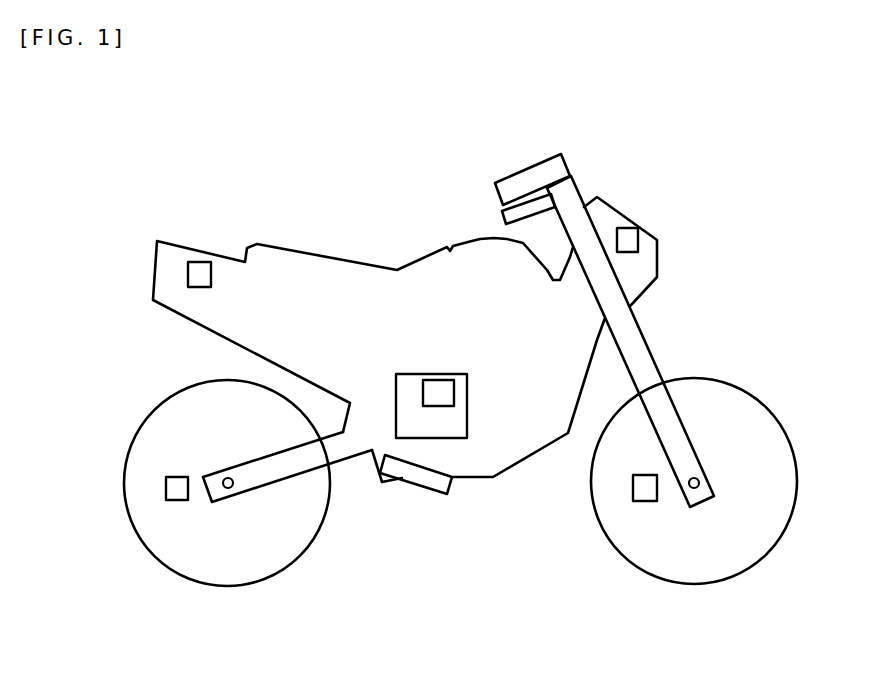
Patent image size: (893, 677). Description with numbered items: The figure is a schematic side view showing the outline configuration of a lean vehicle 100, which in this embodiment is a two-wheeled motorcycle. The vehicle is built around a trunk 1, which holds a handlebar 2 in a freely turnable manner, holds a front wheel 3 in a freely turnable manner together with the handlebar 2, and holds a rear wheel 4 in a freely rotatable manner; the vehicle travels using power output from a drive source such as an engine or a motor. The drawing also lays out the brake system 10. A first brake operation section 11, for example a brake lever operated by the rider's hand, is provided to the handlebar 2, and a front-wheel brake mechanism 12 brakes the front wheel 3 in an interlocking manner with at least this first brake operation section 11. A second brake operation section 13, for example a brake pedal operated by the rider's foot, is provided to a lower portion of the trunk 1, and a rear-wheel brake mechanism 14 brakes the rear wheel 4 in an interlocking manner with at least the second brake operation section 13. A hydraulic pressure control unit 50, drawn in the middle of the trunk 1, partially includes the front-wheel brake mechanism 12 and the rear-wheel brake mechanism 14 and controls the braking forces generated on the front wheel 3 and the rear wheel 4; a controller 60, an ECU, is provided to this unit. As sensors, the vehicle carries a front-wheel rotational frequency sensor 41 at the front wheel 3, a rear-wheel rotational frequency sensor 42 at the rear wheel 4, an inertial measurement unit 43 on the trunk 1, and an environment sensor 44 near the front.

The lean vehicle 100 is at (781, 84).
The trunk 1 is at (283, 258).
The handlebar 2 is at (505, 187).
The front wheel 3 is at (697, 598).
The rear wheel 4 is at (230, 598).
The brake system 10 is at (703, 341).
The first brake operation section 11 is at (524, 207).
The front-wheel brake mechanism 12 is at (712, 455).
The second brake operation section 13 is at (435, 483).
The rear-wheel brake mechanism 14 is at (211, 465).
The front-wheel rotational frequency sensor 41 is at (647, 501).
The rear-wheel rotational frequency sensor 42 is at (167, 488).
The inertial measurement unit 43 is at (197, 262).
The environment sensor 44 is at (621, 228).
The hydraulic pressure control unit 50 is at (404, 374).
The controller 60 is at (437, 380).